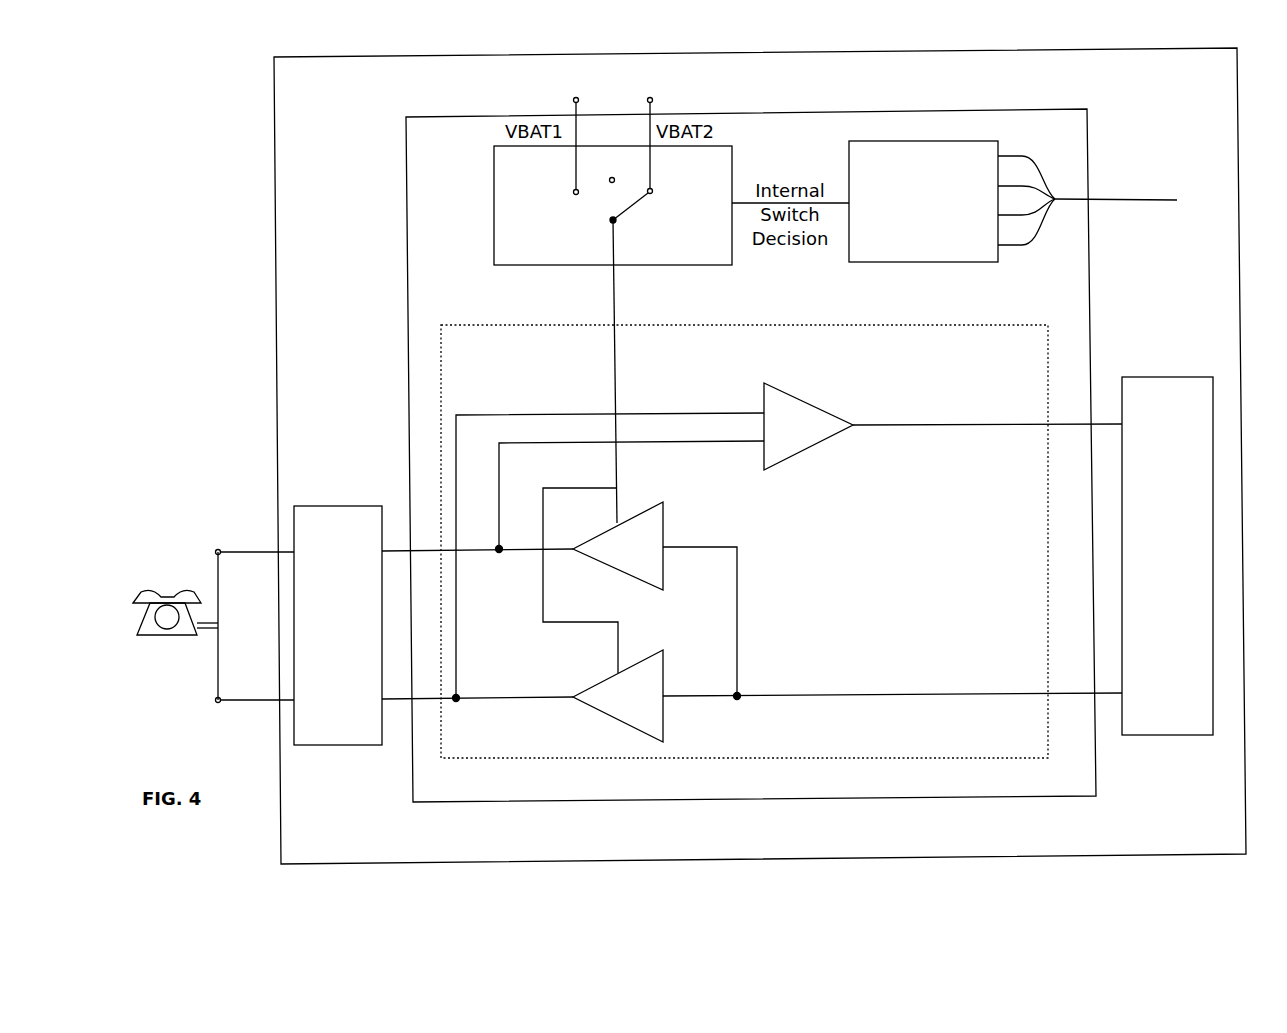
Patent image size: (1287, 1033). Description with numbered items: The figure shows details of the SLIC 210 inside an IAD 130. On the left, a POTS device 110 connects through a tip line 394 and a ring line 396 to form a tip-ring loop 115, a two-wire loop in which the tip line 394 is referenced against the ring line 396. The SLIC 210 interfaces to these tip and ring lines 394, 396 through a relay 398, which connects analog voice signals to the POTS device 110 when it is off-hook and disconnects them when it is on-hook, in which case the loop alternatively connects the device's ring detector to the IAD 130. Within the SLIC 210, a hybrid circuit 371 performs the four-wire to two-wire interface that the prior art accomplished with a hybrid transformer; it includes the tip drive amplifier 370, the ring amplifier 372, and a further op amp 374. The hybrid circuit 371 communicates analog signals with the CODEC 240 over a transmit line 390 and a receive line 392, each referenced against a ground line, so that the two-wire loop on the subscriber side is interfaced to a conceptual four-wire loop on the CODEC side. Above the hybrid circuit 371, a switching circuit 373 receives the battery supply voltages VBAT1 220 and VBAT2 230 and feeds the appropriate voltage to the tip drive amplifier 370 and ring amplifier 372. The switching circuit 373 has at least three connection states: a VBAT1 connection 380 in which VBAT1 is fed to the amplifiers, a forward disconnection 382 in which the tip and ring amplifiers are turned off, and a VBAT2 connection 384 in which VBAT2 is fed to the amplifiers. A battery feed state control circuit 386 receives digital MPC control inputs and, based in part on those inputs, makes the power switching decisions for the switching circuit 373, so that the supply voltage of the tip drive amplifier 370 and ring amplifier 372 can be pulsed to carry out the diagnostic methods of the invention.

The POTS device 110 is at (152, 589).
The tip-ring loop 115 is at (233, 650).
The IAD 130 is at (281, 862).
The SLIC 210 is at (442, 803).
The VBAT1 220 is at (577, 99).
The VBAT2 230 is at (651, 99).
The CODEC 240 is at (1150, 377).
The tip drive amplifier 370 is at (1082, 200).
The hybrid circuit 371 is at (508, 758).
The ring amplifier 372 is at (663, 650).
The switching circuit 373 is at (510, 266).
The Op amp 374 is at (764, 383).
The VBAT1 connection 380 is at (573, 194).
The forward disconnection 382 is at (613, 179).
The VBAT2 connection 384 is at (652, 192).
The battery feed state control circuit 386 is at (910, 141).
The transmit line 390 is at (1060, 422).
The receive line 392 is at (1062, 691).
The tip line 394 is at (218, 550).
The ring line 396 is at (224, 702).
The relay 398 is at (315, 506).